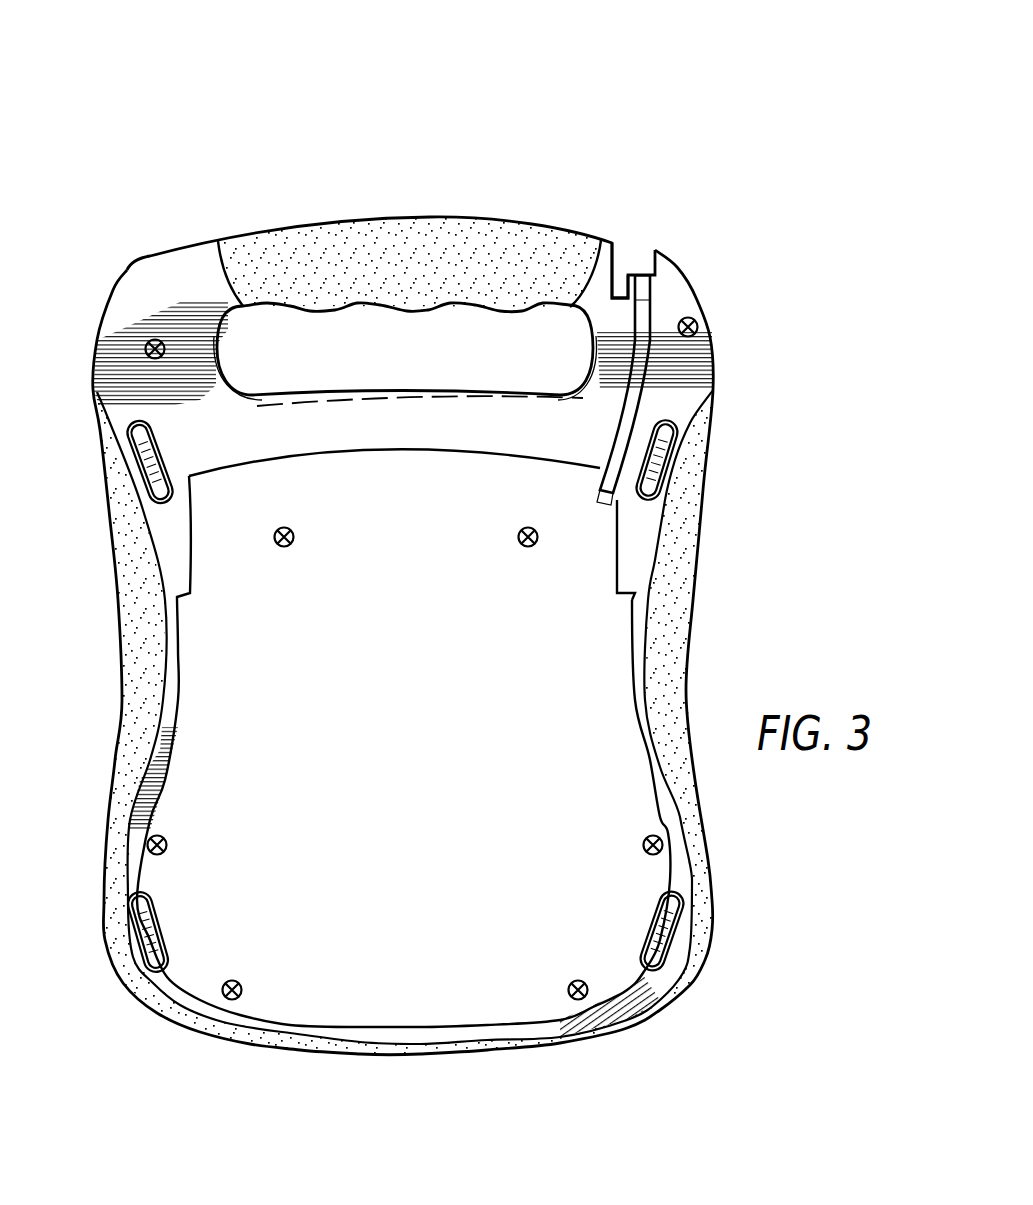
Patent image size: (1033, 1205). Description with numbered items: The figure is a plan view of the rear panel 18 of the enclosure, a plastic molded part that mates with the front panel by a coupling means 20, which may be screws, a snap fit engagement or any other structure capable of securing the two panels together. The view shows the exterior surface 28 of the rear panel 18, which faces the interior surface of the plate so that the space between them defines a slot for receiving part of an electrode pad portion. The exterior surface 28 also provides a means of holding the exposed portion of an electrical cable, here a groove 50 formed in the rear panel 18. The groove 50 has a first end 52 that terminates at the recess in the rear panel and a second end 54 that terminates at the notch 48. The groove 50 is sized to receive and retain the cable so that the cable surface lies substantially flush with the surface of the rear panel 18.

The rear panel 18 is at (554, 152).
The coupling means 20 is at (151, 341).
The exterior surface 28 is at (413, 783).
The notch 48 is at (632, 256).
The groove 50 is at (631, 401).
The first end 52 is at (614, 489).
The second end 54 is at (640, 283).